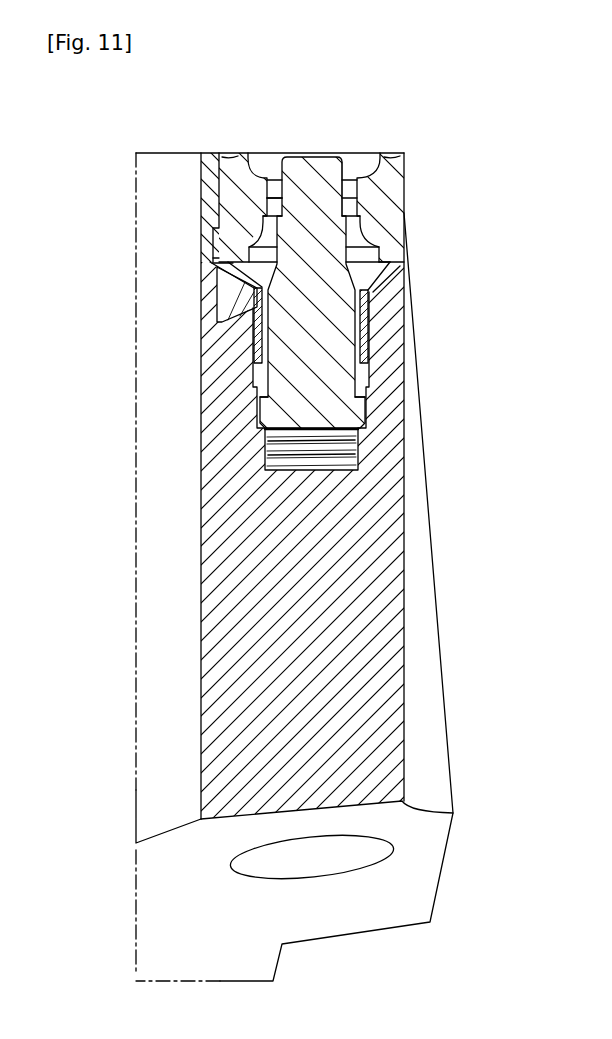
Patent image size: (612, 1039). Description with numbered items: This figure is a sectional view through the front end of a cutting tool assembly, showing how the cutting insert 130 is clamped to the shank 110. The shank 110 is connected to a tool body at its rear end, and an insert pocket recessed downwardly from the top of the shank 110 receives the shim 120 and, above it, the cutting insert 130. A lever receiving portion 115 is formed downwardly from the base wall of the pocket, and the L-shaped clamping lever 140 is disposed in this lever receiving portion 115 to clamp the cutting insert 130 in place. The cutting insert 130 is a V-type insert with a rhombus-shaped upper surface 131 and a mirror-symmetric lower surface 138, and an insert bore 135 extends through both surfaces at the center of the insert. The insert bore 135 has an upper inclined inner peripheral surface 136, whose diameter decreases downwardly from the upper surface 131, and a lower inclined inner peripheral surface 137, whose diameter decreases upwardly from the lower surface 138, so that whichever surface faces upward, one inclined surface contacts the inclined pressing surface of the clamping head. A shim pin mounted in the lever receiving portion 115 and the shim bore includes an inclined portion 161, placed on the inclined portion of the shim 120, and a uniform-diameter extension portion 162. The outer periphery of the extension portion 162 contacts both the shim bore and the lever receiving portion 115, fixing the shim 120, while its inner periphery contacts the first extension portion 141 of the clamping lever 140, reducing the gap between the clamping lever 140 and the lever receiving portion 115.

The shank 110 is at (350, 547).
The lever receiving portion 115 is at (257, 392).
The shim 120 is at (393, 288).
The cutting insert 130 is at (395, 190).
The upper surface 131 is at (379, 154).
The insert bore 135 is at (353, 155).
The upper inclined inner peripheral surface 136 is at (268, 178).
The lower inclined inner peripheral surface 137 is at (212, 266).
The lower surface 138 is at (388, 266).
The clamping lever 140 is at (363, 378).
The first extension portion 141 is at (317, 321).
The inclined portion 161 is at (252, 286).
The extension portion 162 is at (257, 338).